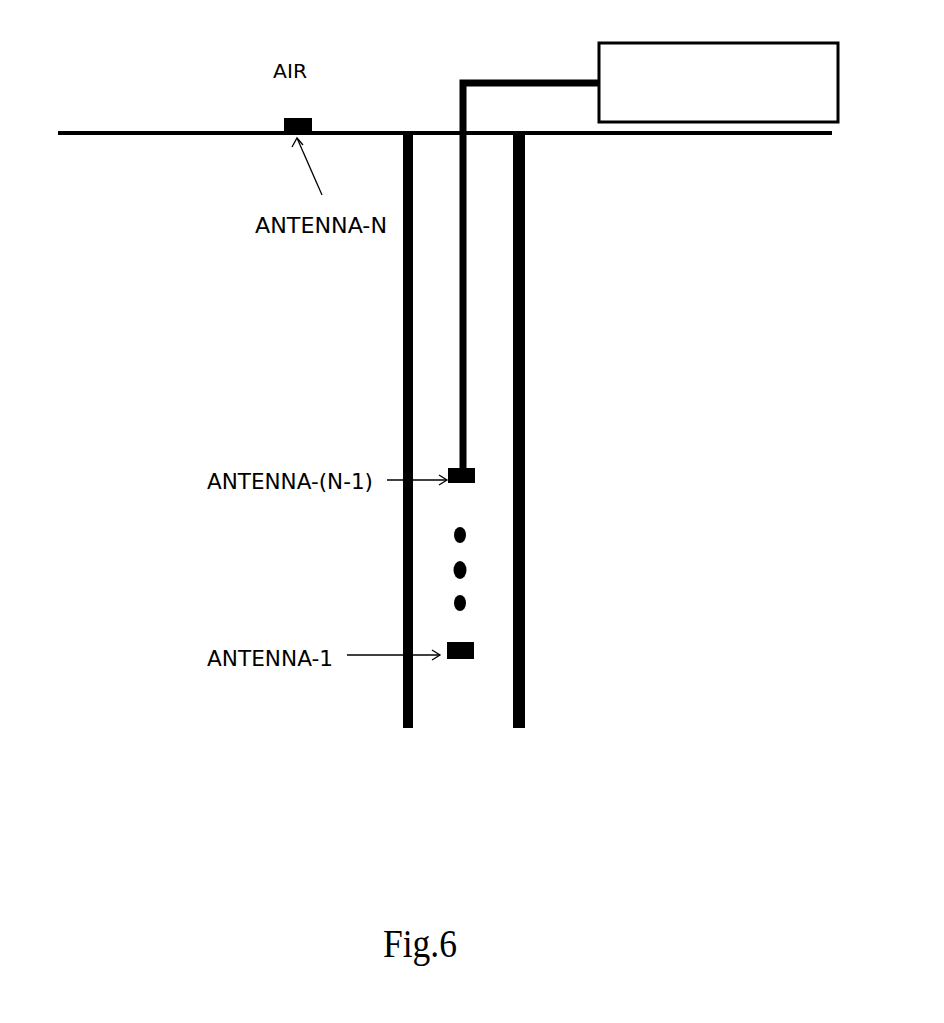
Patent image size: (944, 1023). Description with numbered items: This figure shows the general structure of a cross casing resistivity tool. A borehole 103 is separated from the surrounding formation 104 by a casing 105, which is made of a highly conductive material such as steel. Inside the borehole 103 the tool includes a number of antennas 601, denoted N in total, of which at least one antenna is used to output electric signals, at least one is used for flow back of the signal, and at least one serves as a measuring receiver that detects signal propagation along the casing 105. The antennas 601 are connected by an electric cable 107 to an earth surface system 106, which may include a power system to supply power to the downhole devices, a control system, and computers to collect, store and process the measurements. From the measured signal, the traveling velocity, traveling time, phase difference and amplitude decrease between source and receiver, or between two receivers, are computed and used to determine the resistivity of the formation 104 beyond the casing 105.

The borehole 103 is at (490, 215).
The formation 104 is at (445, 346).
The casing 105 is at (418, 362).
The surface system 106 is at (598, 62).
The electric cable 107 is at (469, 306).
The antennas 601 is at (432, 633).